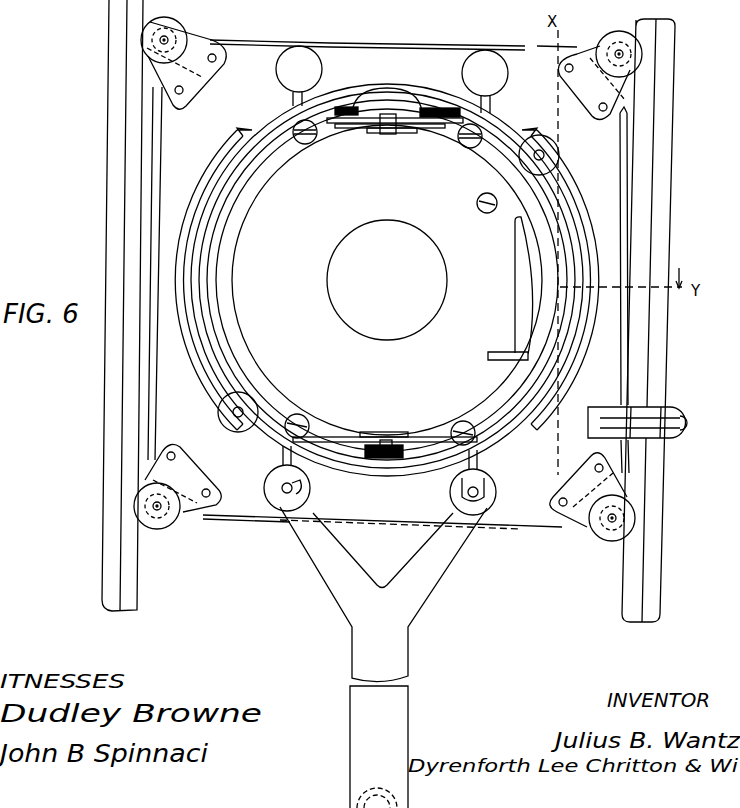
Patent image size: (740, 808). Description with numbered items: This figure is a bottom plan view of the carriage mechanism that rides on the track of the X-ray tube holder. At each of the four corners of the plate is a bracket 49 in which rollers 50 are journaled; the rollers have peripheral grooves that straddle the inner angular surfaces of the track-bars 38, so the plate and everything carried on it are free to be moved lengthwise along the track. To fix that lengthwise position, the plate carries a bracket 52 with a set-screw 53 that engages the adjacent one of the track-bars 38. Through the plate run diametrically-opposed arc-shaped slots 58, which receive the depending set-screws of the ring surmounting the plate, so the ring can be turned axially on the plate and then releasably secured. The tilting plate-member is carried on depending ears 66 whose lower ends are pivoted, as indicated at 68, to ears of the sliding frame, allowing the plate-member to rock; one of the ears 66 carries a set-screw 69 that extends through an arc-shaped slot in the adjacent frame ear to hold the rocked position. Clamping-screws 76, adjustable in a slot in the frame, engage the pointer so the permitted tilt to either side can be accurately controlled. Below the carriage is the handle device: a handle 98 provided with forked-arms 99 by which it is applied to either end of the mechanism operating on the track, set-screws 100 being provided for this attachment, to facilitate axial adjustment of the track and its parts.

The track-bars 38 is at (104, 439).
The bracket 49 is at (587, 516).
The rollers 50 is at (170, 23).
The bracket 52 is at (665, 415).
The set-screw 53 is at (687, 427).
The arc-shaped slots 58 is at (190, 243).
The ears 66 is at (377, 128).
The pivots 68 is at (392, 134).
The set-screw 69 is at (387, 459).
The clamping-screws 76 is at (422, 108).
The handle 98 is at (409, 696).
The forked-arms 99 is at (323, 573).
The set-screws 100 is at (309, 57).